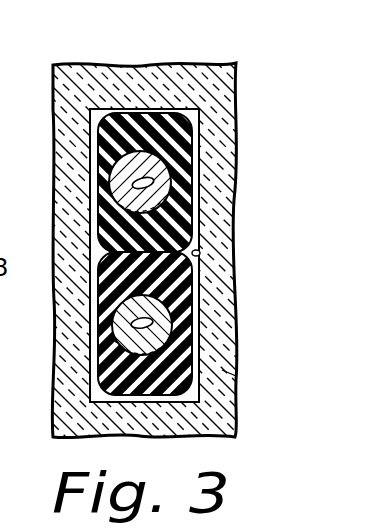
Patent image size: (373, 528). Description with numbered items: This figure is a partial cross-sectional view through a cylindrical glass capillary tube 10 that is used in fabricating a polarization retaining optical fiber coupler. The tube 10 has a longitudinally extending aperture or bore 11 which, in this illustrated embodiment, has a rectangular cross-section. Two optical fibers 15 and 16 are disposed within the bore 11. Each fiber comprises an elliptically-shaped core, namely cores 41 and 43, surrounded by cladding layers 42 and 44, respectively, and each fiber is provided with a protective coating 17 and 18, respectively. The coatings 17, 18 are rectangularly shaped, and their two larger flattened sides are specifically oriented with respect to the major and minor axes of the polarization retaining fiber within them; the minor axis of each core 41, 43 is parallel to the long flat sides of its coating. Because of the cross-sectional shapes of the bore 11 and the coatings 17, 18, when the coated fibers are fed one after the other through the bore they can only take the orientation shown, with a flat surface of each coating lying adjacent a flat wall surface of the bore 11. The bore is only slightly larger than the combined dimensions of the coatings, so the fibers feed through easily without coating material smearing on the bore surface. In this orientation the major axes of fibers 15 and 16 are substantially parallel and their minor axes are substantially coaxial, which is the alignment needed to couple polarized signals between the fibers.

The cylindrical glass capillary tube 10 is at (147, 73).
The bore 11 is at (200, 253).
The fiber 15 is at (112, 154).
The fiber 16 is at (163, 344).
The protective coating 17 is at (184, 139).
The protective coating 18 is at (178, 290).
The core 41 is at (133, 185).
The cladding layer 42 is at (116, 204).
The core 43 is at (192, 356).
The cladding layer 44 is at (236, 376).